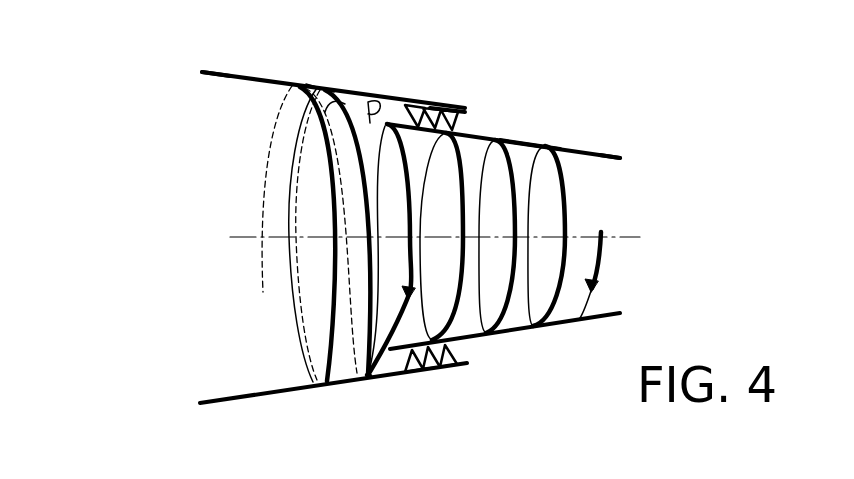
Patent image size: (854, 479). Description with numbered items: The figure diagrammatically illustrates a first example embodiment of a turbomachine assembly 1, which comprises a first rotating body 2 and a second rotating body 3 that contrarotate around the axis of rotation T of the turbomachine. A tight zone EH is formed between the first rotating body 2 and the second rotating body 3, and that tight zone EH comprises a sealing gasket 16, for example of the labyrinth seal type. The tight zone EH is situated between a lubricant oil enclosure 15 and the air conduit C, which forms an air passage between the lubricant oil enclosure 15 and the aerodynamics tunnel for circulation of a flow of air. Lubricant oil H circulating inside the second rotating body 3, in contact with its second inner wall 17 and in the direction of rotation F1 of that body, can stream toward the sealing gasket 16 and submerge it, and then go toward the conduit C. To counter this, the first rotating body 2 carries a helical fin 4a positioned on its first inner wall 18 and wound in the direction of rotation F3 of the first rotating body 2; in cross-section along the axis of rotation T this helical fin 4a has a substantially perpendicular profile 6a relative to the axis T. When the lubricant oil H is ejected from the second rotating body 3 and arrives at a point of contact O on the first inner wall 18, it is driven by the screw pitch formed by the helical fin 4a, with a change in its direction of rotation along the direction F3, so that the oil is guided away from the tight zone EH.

The turbomachine assembly 1 is at (184, 282).
The first rotating body 2 is at (221, 72).
The second rotating body 3 is at (586, 152).
The helical fin 4a is at (337, 383).
The substantially perpendicular profile 6a is at (380, 97).
The lubricant oil enclosure 15 is at (617, 211).
The sealing gasket 16 is at (467, 362).
The second inner wall 17 is at (619, 158).
The first inner wall 18 is at (215, 75).
The lubricant oil H is at (320, 87).
The air conduit C is at (598, 80).
The tight zone EH is at (433, 76).
The axis of rotation T is at (633, 235).
The direction of rotation of the second rotating body F1 is at (420, 292).
The direction of rotation of the first rotating body F3 is at (261, 218).
The point of contact O is at (367, 378).